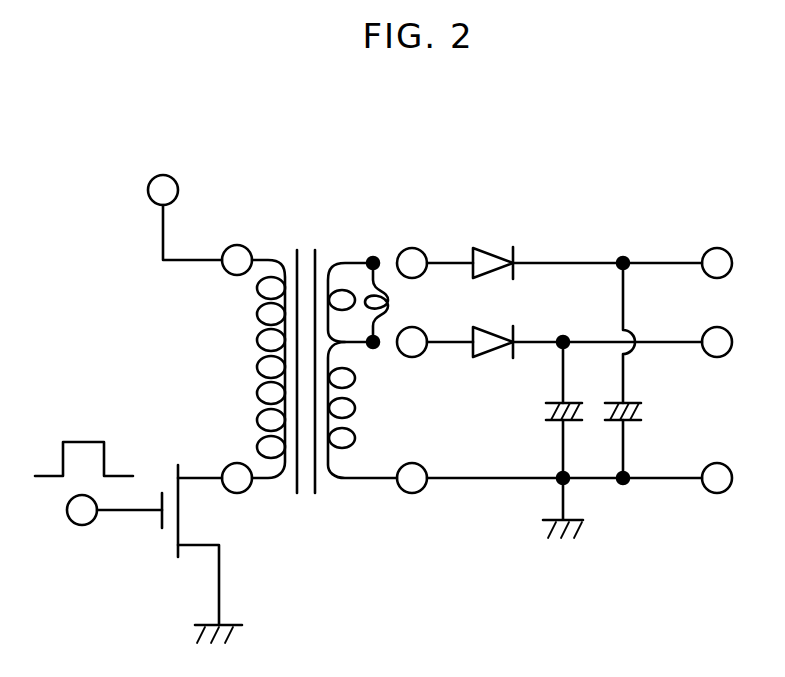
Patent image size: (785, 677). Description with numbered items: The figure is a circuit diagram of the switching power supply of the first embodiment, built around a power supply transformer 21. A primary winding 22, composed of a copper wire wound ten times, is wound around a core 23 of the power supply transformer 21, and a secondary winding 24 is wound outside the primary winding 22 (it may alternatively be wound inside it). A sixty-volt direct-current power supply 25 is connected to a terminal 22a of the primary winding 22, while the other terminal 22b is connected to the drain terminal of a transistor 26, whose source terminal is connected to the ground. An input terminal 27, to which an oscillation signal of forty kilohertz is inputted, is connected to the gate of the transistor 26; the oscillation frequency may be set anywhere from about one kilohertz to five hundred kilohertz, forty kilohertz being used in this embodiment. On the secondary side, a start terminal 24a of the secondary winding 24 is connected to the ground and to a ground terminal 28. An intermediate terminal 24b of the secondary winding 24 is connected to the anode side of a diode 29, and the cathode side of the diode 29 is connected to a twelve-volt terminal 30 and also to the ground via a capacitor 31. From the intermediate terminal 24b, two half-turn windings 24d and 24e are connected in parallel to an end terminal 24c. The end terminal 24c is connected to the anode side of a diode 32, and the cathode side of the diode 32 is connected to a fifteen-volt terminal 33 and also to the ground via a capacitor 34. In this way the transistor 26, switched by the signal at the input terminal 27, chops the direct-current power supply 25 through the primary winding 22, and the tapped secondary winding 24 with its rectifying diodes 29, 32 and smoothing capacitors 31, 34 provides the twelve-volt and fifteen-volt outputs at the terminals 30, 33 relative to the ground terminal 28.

The power supply transformer 21 is at (298, 240).
The primary winding 22 is at (255, 318).
The terminal of the primary winding 22a is at (237, 246).
The other terminal of the primary winding 22b is at (240, 494).
The core 23 is at (318, 254).
The secondary winding 24 is at (357, 410).
The start terminal 24a is at (412, 494).
The intermediate terminal 24b is at (412, 358).
The end terminal 24c is at (412, 247).
The 0.5-turn winding 24d is at (347, 292).
The 0.5-turn winding 24e is at (392, 297).
The 60V direct-current power supply 25 is at (147, 190).
The transistor 26 is at (169, 470).
The input terminal 27 is at (82, 526).
The ground terminal 28 is at (712, 494).
The diode 29 is at (485, 358).
The 12V terminal 30 is at (717, 358).
The capacitor 31 is at (545, 412).
The diode 32 is at (487, 246).
The 15V terminal 33 is at (712, 249).
The capacitor 34 is at (642, 415).